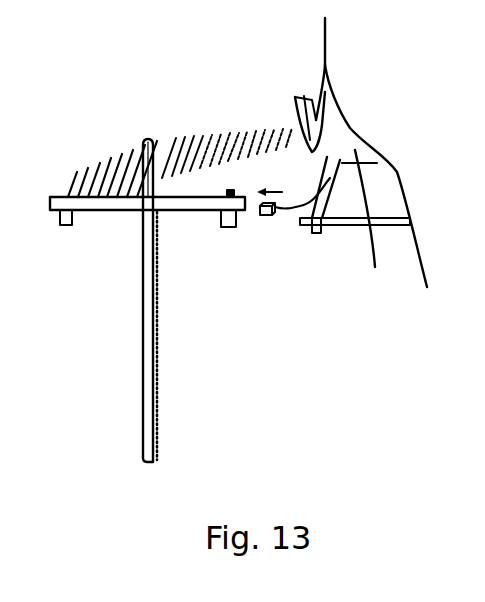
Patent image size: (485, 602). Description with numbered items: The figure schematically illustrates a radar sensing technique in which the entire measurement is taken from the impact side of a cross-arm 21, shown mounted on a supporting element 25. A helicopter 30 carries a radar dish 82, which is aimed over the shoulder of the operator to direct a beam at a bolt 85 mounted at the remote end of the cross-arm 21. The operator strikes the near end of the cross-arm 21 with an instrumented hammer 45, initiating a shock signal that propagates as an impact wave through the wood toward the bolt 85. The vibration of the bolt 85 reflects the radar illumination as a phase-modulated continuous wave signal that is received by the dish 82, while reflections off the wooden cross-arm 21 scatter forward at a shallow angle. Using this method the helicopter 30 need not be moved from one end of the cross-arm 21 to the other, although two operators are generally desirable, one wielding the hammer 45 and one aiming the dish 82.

The cross-arm 21 is at (123, 205).
The post 25 is at (142, 368).
The bolt 85 is at (68, 195).
The radar dish 82 is at (313, 92).
The helicopter 30 is at (355, 229).
The hammer 45 is at (268, 216).